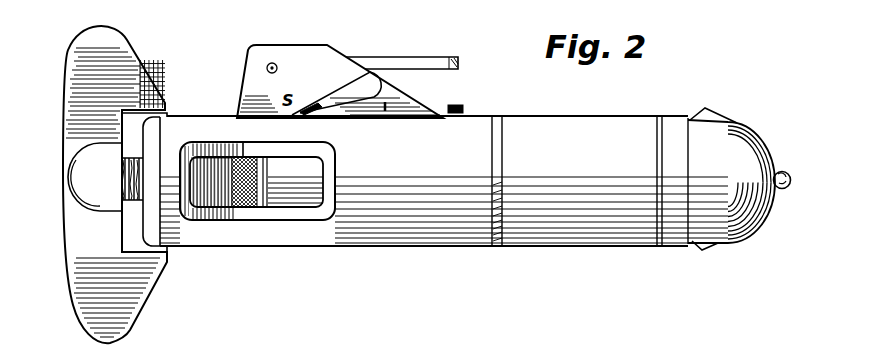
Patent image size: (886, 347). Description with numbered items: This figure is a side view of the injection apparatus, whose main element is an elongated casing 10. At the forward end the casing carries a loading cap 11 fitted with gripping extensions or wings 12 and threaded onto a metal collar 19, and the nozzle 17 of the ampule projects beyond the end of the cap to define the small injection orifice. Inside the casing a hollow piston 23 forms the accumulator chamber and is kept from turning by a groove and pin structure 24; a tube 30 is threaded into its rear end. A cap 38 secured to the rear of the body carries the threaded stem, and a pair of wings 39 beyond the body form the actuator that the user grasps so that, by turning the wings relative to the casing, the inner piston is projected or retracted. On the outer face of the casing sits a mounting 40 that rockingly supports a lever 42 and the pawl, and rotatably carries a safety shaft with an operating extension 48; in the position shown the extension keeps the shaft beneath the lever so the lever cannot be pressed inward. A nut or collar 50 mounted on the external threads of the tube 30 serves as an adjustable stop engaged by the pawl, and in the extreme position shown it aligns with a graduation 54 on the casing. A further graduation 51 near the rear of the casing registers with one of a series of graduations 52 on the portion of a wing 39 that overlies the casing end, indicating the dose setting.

The casing 10 is at (608, 102).
The loading cap 11 is at (752, 142).
The gripping extensions or wings 12 is at (703, 108).
The nozzle 17 is at (790, 178).
The collar 19 is at (672, 121).
The piston 23 is at (306, 197).
The groove and pin structure 24 is at (463, 106).
The tube 30 is at (221, 208).
The cap 38 is at (150, 137).
The wings 39 is at (117, 297).
The mounting 40 is at (298, 52).
The lever 42 is at (448, 44).
The operating extension 48 is at (310, 105).
The nut or collar 50 is at (256, 208).
The graduation 51 is at (190, 247).
The graduations 52 is at (158, 86).
The graduation 54 is at (243, 143).